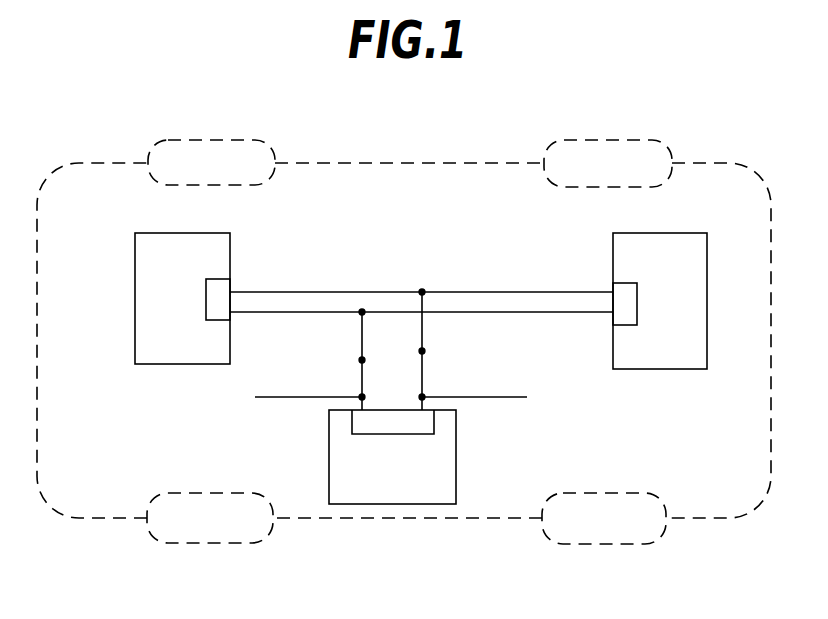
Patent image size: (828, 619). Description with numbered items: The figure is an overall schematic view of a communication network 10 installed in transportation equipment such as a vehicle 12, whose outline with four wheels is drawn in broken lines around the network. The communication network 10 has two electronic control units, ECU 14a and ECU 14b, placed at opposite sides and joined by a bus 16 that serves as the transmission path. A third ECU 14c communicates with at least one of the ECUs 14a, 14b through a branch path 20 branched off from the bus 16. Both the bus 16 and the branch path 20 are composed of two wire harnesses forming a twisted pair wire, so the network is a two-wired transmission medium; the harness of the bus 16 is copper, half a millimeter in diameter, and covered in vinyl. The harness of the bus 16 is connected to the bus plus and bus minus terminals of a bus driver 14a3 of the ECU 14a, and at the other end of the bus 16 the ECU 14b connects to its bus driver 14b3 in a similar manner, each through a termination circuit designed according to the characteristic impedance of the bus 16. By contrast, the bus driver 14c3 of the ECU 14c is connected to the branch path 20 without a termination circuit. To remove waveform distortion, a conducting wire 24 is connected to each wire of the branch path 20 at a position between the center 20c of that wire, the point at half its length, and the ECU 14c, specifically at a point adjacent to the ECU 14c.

The communication network 10 is at (498, 250).
The vehicle 12 is at (328, 162).
The electronic control unit 14a is at (213, 233).
The bus driver 14a3 is at (206, 298).
The electronic control unit 14b is at (642, 236).
The bus driver 14b3 is at (637, 305).
The electronic control unit 14c is at (458, 414).
The bus driver 14c3 is at (393, 436).
The bus 16 is at (458, 292).
The branch path 20 is at (421, 329).
The center of each wire of the branch path 20c is at (362, 360).
The conducting wire 24 is at (315, 397).